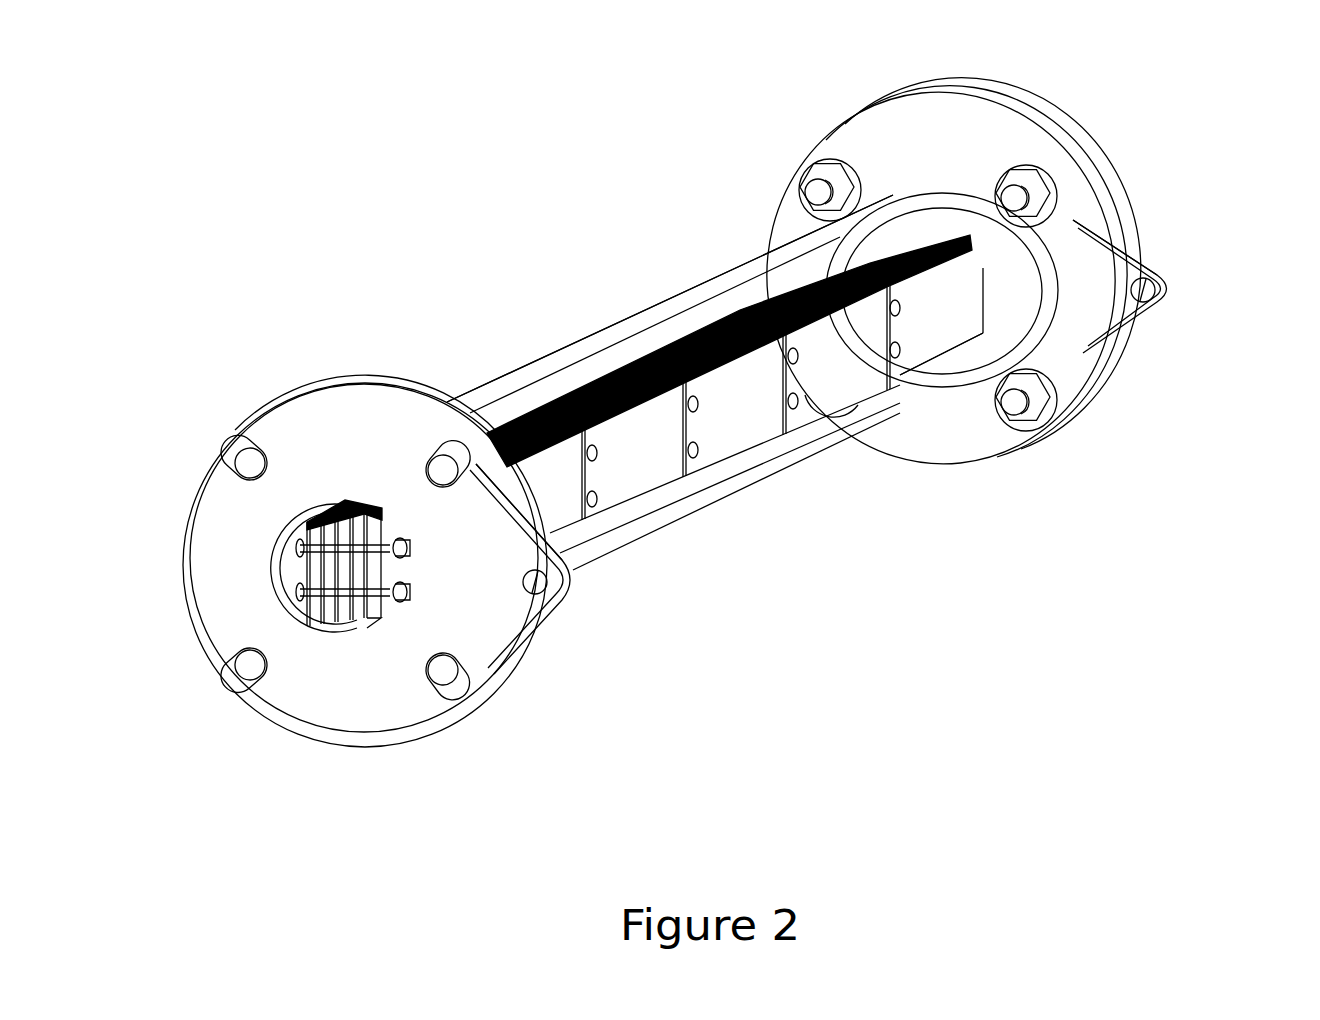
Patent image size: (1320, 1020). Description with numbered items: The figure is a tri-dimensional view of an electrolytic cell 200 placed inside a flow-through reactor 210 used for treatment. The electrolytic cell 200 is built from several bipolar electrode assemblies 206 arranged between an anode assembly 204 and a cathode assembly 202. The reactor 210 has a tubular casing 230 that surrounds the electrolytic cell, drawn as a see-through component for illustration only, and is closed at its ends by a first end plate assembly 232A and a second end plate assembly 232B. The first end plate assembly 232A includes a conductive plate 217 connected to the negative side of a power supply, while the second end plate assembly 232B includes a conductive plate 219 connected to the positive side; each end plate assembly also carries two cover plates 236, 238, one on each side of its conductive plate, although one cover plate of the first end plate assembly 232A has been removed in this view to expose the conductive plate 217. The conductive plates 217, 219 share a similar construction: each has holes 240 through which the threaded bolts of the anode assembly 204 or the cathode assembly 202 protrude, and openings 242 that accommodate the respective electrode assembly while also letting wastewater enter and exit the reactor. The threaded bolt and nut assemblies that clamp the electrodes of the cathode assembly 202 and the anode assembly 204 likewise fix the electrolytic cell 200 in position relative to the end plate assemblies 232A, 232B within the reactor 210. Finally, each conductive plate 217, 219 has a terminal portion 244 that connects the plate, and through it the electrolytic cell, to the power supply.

The electrolytic cell 200 is at (672, 330).
The cathode assembly 202 is at (303, 568).
The anode assembly 204 is at (940, 318).
The bipolar electrode assemblies 206 is at (830, 360).
The flow-through reactor 210 is at (652, 158).
The conductive plate 217 is at (480, 622).
The conductive plate 219 is at (1140, 231).
The tubular casing 230 is at (555, 360).
The first end plate assembly 232A is at (512, 658).
The second end plate assembly 232B is at (1093, 410).
The cover plate 236 is at (1090, 153).
The cover plate 238 is at (1047, 120).
The holes 240 is at (395, 602).
The openings 242 is at (330, 640).
The terminal portion 244 is at (520, 607).